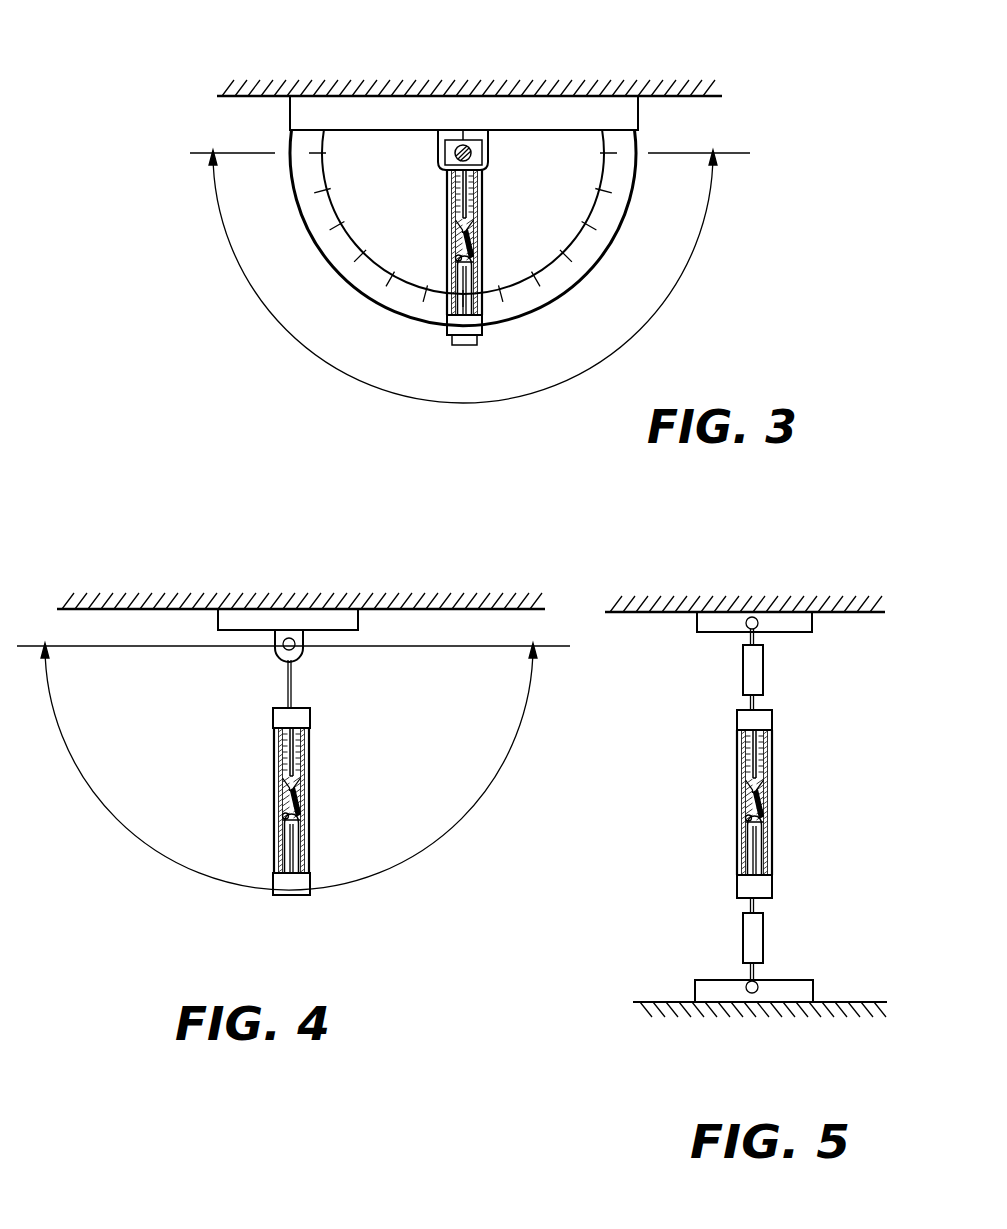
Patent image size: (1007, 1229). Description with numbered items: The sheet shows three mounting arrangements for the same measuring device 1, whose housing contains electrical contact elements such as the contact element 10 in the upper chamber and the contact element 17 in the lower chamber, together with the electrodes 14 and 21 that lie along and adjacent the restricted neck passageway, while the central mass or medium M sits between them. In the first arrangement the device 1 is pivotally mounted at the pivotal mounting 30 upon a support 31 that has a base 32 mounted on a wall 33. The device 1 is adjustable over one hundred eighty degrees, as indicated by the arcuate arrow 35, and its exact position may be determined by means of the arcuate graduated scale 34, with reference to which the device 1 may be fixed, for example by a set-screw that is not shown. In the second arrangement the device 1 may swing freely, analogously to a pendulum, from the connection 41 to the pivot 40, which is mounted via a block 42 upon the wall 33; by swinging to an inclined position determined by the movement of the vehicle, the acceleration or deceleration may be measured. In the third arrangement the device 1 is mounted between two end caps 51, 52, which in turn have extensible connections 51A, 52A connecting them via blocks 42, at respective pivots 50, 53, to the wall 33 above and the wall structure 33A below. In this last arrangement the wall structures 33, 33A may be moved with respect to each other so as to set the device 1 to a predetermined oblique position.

In FIG. 3, the device 1 is at (437, 228).
In FIG. 4, the device 1 is at (267, 807).
In FIG. 5, the device 1 is at (728, 815).
In FIG. 3, the contact element 10 is at (483, 197).
In FIG. 4, the contact element 10 is at (303, 748).
In FIG. 5, the contact element 10 is at (755, 755).
In FIG. 3, the electrode 14 is at (494, 223).
In FIG. 4, the electrode 14 is at (300, 797).
In FIG. 5, the electrode 14 is at (772, 797).
In FIG. 3, the mass element M is at (478, 241).
In FIG. 4, the mass element M is at (303, 808).
In FIG. 5, the mass element M is at (743, 792).
In FIG. 3, the contact element 17 is at (464, 278).
In FIG. 4, the contact element 17 is at (292, 855).
In FIG. 5, the contact element 17 is at (755, 843).
In FIG. 3, the electrode 21 is at (455, 252).
In FIG. 4, the electrode 21 is at (282, 805).
In FIG. 5, the electrode 21 is at (735, 813).
In FIG. 3, the pivotal mounting 30 is at (471, 155).
In FIG. 3, the support 31 is at (482, 136).
In FIG. 3, the base 32 is at (566, 113).
In FIG. 3, the wall 33 is at (690, 97).
In FIG. 4, the wall 33 is at (407, 603).
In FIG. 5, the wall 33 is at (650, 614).
In FIG. 5, the wall structure 33A is at (852, 1003).
In FIG. 3, the arcuate graduated scale 34 is at (588, 258).
In FIG. 3, the arcuate arrow 35 is at (525, 401).
In FIG. 4, the arcuate arrow 35 is at (293, 766).
In FIG. 4, the pivot 40 is at (296, 657).
In FIG. 4, the connection 41 is at (287, 682).
In FIG. 4, the block 42 is at (360, 625).
In FIG. 5, the block 42 is at (813, 622).
In FIG. 5, the pivot 50 is at (757, 628).
In FIG. 5, the end cap 51 is at (737, 723).
In FIG. 5, the extensible connection 51A is at (764, 680).
In FIG. 5, the end cap 52 is at (737, 887).
In FIG. 5, the extensible connection 52A is at (763, 928).
In FIG. 5, the pivot 53 is at (757, 985).